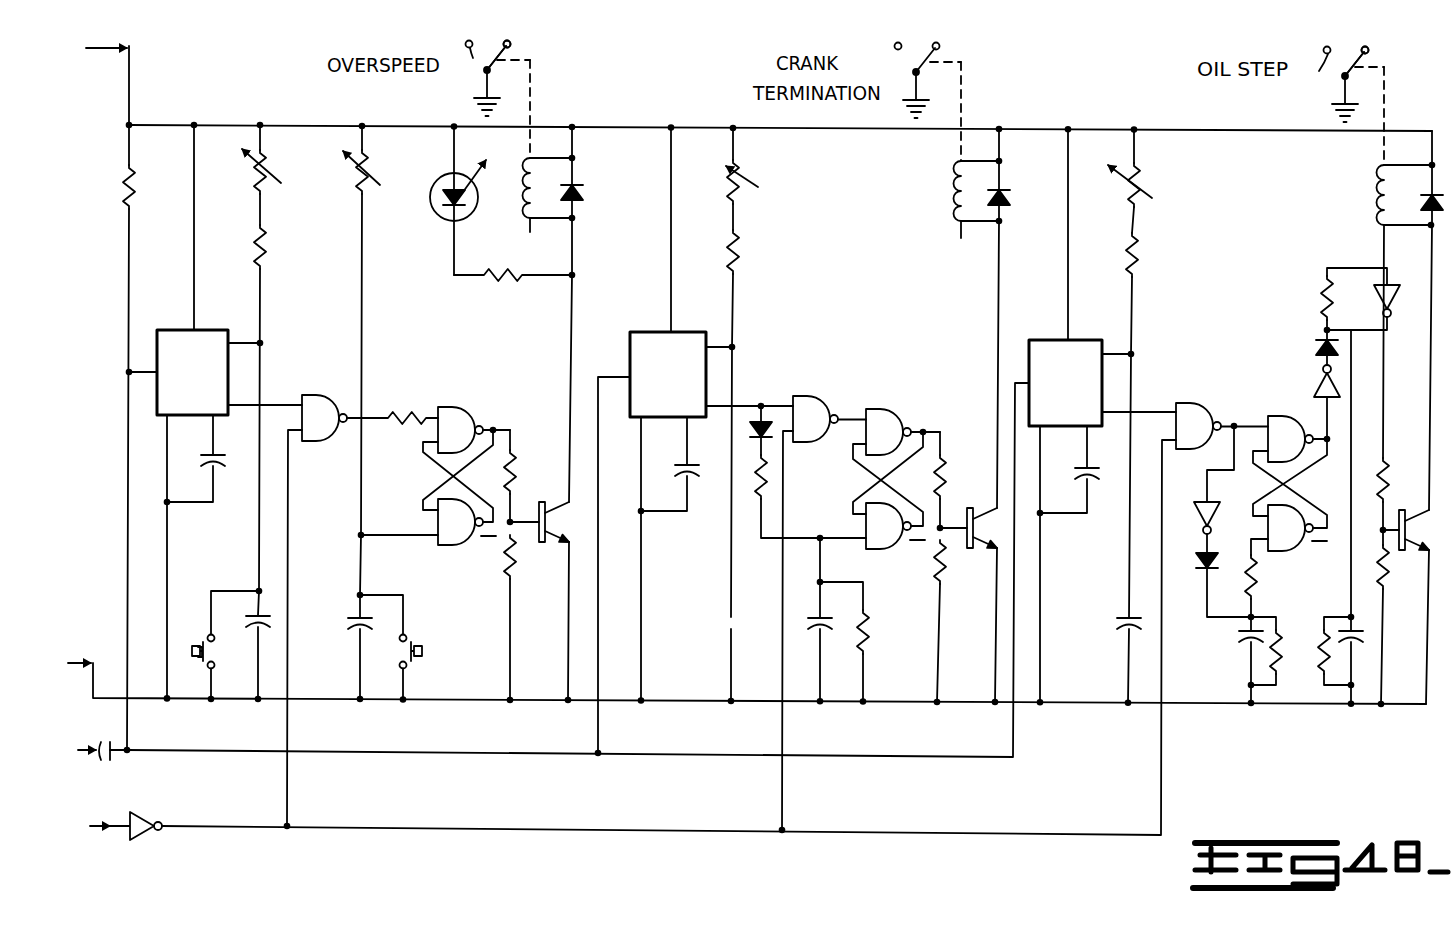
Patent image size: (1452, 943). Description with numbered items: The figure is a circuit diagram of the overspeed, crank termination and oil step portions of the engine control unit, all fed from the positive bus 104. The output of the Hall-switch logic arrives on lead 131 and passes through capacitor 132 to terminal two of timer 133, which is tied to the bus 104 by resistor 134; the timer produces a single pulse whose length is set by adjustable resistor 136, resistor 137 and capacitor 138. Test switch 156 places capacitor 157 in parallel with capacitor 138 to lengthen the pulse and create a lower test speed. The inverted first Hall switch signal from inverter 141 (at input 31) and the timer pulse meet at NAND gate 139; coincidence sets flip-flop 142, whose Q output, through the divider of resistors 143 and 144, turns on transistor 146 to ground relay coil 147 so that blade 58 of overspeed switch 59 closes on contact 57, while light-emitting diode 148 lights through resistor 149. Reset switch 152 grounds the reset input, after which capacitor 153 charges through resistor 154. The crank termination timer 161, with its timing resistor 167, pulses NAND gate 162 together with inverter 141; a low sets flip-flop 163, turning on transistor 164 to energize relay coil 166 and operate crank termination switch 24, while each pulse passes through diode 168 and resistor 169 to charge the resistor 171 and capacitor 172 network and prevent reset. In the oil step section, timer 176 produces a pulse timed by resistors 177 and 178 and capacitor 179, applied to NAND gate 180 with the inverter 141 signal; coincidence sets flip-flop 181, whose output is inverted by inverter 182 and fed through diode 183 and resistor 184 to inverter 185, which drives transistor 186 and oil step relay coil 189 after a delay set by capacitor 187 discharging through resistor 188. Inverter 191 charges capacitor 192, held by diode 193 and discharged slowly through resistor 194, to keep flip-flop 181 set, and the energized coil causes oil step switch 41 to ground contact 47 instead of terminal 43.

The positive bus 104 is at (240, 123).
The resistor 134 is at (133, 195).
The resistor 136 is at (257, 182).
The resistor 137 is at (256, 245).
The resistor 154 is at (357, 180).
The timer 133 is at (164, 319).
The capacitor 138 is at (252, 620).
The capacitor 157 is at (207, 620).
The test switch 156 is at (182, 631).
The capacitor 153 is at (346, 628).
The reset switch 152 is at (425, 665).
The lead 131 is at (89, 751).
The capacitor 132 is at (110, 755).
The input line 31 is at (113, 828).
The inverter 141 is at (147, 840).
The NAND gate 139 is at (321, 394).
The flip-flop 142 is at (453, 396).
The resistor 143 is at (540, 444).
The resistor 144 is at (520, 572).
The transistor 146 is at (552, 530).
The light-emitting diode 148 is at (442, 210).
The resistor 149 is at (511, 278).
The relay coil 147 is at (526, 197).
The normally open contact 57 is at (480, 79).
The overspeed switch 59 is at (476, 28).
The switch blade 58 is at (509, 38).
The crank termination timer 161 is at (642, 320).
The variable resistor 167 is at (737, 173).
The relay coil 166 is at (947, 198).
The crank termination switch 24 is at (923, 40).
The diode 168 is at (774, 428).
The resistor 169 is at (759, 482).
The NAND gate 162 is at (796, 397).
The flip-flop 163 is at (894, 394).
The transistor 164 is at (966, 548).
The resistor 171 is at (868, 636).
The capacitor 172 is at (826, 630).
The timer 176 is at (1030, 332).
The resistor 177 is at (1143, 178).
The resistor 178 is at (1134, 267).
The capacitor 179 is at (1128, 628).
The NAND gate 180 is at (1185, 403).
The flip-flop 181 is at (1271, 403).
The inverter 182 is at (1322, 380).
The diode 183 is at (1322, 342).
The resistor 184 is at (1331, 293).
The inverter 185 is at (1389, 290).
The oil step relay coil 189 is at (1376, 200).
The transistor 186 is at (1402, 508).
The inverter 191 is at (1196, 498).
The diode 193 is at (1201, 563).
The resistor 188 is at (1322, 643).
The capacitor 187 is at (1359, 627).
The capacitor 192 is at (1252, 640).
The resistor 194 is at (1281, 652).
The normally open contact 47 is at (1331, 85).
The oil step switch 41 is at (1343, 40).
The terminal 43 is at (1371, 50).